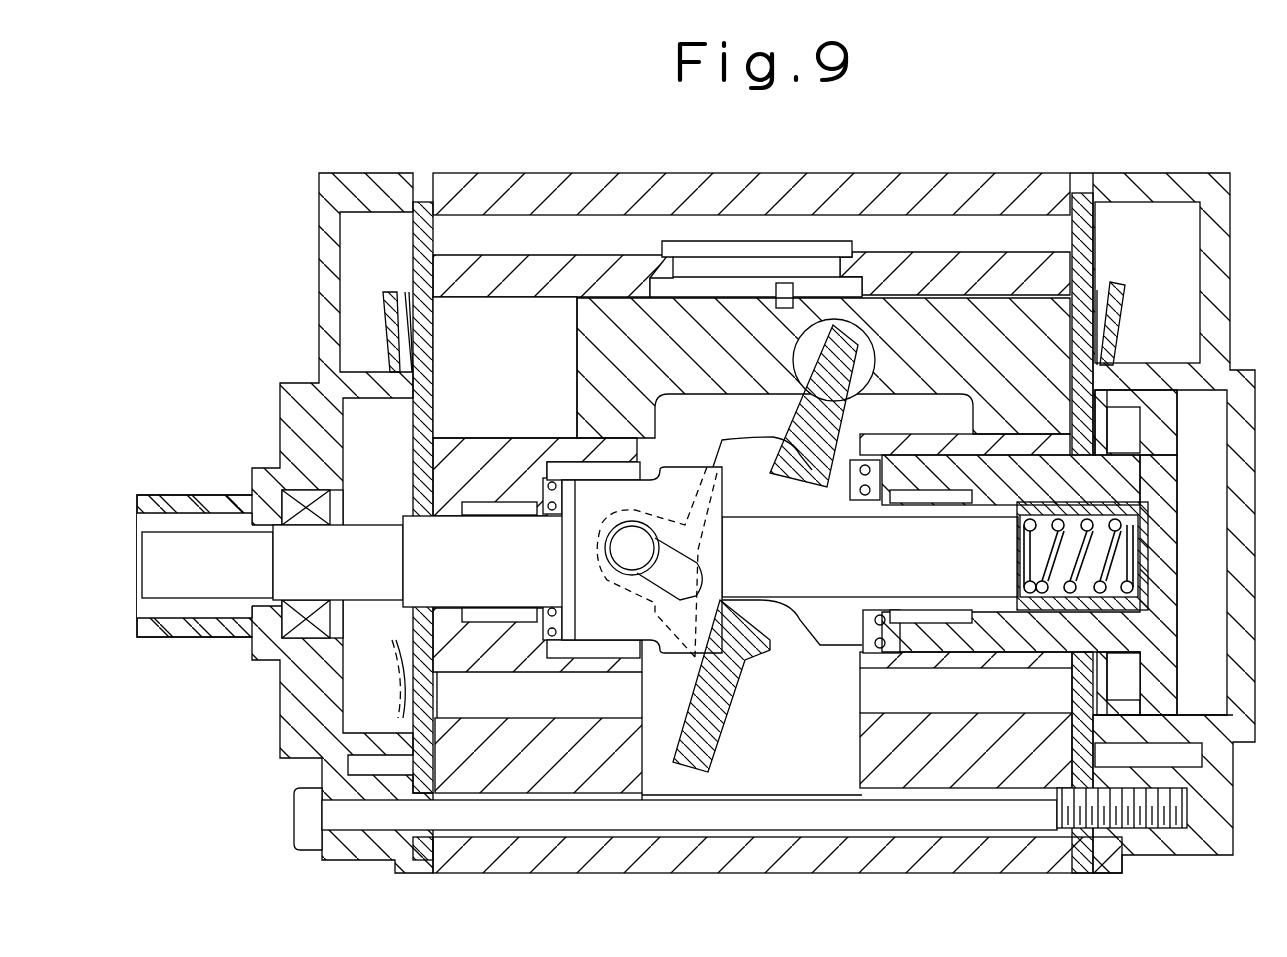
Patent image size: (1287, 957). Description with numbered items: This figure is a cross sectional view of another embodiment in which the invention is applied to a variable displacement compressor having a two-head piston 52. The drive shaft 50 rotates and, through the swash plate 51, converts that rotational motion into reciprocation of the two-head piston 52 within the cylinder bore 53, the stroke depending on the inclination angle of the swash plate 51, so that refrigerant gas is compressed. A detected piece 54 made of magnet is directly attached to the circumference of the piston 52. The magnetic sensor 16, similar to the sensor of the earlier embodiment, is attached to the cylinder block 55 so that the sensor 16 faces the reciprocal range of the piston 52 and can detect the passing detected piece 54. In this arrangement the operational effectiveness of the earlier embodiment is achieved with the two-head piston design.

The magnetic sensor 16 is at (731, 242).
The drive shaft 50 is at (152, 562).
The swash plate 51 is at (715, 730).
The two-head piston 52 is at (585, 352).
The cylinder bore 53 is at (500, 411).
The detected piece 54 is at (787, 283).
The cylinder block 55 is at (916, 186).